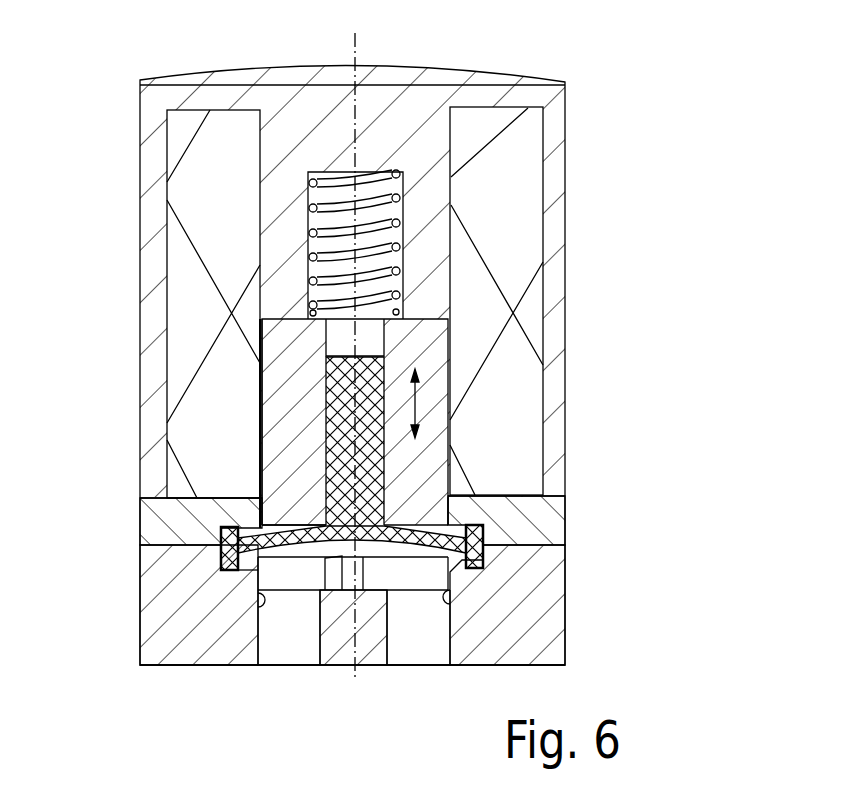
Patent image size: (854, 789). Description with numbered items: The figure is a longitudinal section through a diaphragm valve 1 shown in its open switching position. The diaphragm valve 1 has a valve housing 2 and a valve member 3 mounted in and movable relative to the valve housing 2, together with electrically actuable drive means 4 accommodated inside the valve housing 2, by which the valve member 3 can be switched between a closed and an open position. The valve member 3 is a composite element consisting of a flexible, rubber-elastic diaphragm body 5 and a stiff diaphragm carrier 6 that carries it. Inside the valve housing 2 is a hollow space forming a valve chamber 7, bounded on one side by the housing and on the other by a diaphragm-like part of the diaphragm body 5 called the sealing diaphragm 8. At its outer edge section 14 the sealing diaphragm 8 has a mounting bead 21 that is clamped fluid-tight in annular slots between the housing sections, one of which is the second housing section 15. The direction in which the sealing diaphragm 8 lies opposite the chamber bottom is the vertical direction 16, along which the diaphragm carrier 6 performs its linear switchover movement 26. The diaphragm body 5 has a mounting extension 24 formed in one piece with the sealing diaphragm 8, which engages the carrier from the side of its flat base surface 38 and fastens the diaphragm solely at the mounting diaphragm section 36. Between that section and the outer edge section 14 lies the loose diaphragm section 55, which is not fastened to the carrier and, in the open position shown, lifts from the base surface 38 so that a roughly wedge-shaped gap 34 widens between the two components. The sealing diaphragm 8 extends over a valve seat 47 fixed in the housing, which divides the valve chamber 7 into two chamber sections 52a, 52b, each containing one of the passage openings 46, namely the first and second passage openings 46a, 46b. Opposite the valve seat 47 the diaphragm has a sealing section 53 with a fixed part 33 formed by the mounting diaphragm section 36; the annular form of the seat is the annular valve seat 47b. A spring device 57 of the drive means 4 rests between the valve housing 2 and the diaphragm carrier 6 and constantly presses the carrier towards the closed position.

The diaphragm valve 1 is at (596, 143).
The valve housing 2 is at (152, 643).
The valve member 3 is at (268, 383).
The drive means 4 is at (505, 138).
The diaphragm body 5 is at (374, 489).
The diaphragm carrier 6 is at (432, 338).
The valve chamber 7 is at (407, 572).
The sealing diaphragm 8 is at (300, 521).
The outer edge section 14 is at (447, 549).
The mounting bead 21 is at (484, 558).
The second housing section 15 is at (555, 512).
The vertical direction 16 is at (361, 33).
The mounting extension 24 is at (432, 363).
The switchover movement 26 is at (425, 412).
The fixed part 33 is at (353, 627).
The sealing section 53 is at (372, 647).
The gap 34 is at (263, 533).
The mounting diaphragm section 36 is at (350, 537).
The base surface 38 is at (433, 531).
The passage opening 46 is at (360, 626).
The first passage opening 46a is at (451, 597).
The second passage opening 46b is at (266, 602).
The valve seat 47 is at (300, 640).
The annular valve seat 47b is at (289, 627).
The first chamber section 52a is at (433, 575).
The second chamber section 52b is at (277, 577).
The loose diaphragm section 55 is at (397, 540).
The spring device 57 is at (373, 187).